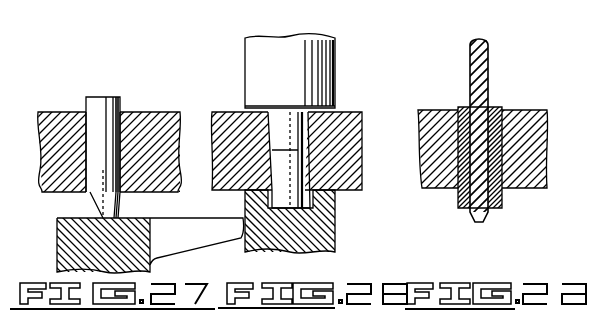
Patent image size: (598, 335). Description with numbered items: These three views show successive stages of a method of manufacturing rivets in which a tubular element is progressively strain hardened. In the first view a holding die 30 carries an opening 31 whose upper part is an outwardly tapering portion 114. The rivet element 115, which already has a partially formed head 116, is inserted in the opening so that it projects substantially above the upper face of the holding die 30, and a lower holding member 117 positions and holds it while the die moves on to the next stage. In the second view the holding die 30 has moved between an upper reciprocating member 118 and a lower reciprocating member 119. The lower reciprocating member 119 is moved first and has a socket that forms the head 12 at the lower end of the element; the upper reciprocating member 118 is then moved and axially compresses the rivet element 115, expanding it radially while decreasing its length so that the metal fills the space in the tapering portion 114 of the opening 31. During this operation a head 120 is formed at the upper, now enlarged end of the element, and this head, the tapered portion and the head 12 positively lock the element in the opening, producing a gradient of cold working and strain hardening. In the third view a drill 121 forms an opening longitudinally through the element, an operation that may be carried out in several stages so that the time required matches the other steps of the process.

In FIG. 28, the head 12 is at (268, 198).
In FIG. 29, the head 12 is at (458, 200).
In FIG. 27, the holding die 30 is at (155, 112).
In FIG. 28, the holding die 30 is at (363, 116).
In FIG. 29, the holding die 30 is at (530, 112).
In FIG. 27, the opening 31 is at (117, 176).
In FIG. 27, the outwardly tapering portion 114 is at (135, 112).
In FIG. 27, the rivet element 115 is at (86, 100).
In FIG. 27, the partially formed head 116 is at (88, 199).
In FIG. 27, the lower holding member 117 is at (60, 242).
In FIG. 28, the upper reciprocating member 118 is at (250, 50).
In FIG. 28, the lower reciprocating member 119 is at (330, 217).
In FIG. 28, the head 120 is at (337, 95).
In FIG. 29, the drill 121 is at (487, 42).